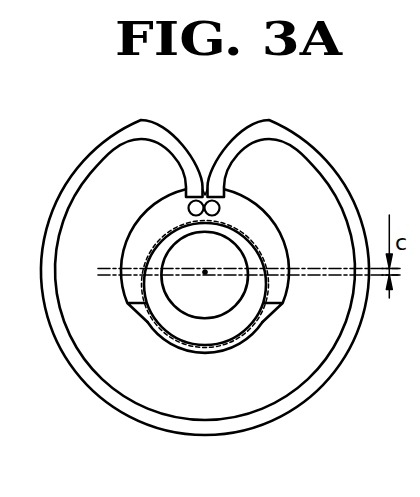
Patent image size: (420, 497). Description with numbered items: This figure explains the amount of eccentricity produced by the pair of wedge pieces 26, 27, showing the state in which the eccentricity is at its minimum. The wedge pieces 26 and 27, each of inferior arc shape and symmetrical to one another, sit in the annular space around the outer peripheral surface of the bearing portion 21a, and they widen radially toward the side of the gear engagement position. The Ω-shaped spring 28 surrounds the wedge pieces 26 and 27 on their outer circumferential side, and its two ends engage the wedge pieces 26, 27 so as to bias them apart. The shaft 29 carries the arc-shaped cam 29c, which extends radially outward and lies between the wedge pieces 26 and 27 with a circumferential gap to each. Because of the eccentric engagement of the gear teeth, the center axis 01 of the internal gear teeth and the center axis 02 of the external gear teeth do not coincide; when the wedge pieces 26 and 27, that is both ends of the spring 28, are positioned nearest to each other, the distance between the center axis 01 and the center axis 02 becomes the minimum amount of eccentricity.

The spring 28 is at (343, 182).
The wedge piece 26 is at (154, 218).
The wedge piece 27 is at (266, 213).
The cam 29c is at (243, 328).
The bearing portion 21a is at (165, 320).
The shaft 29 is at (235, 286).
The center axis 02 is at (205, 272).
The center axis 01 is at (205, 272).